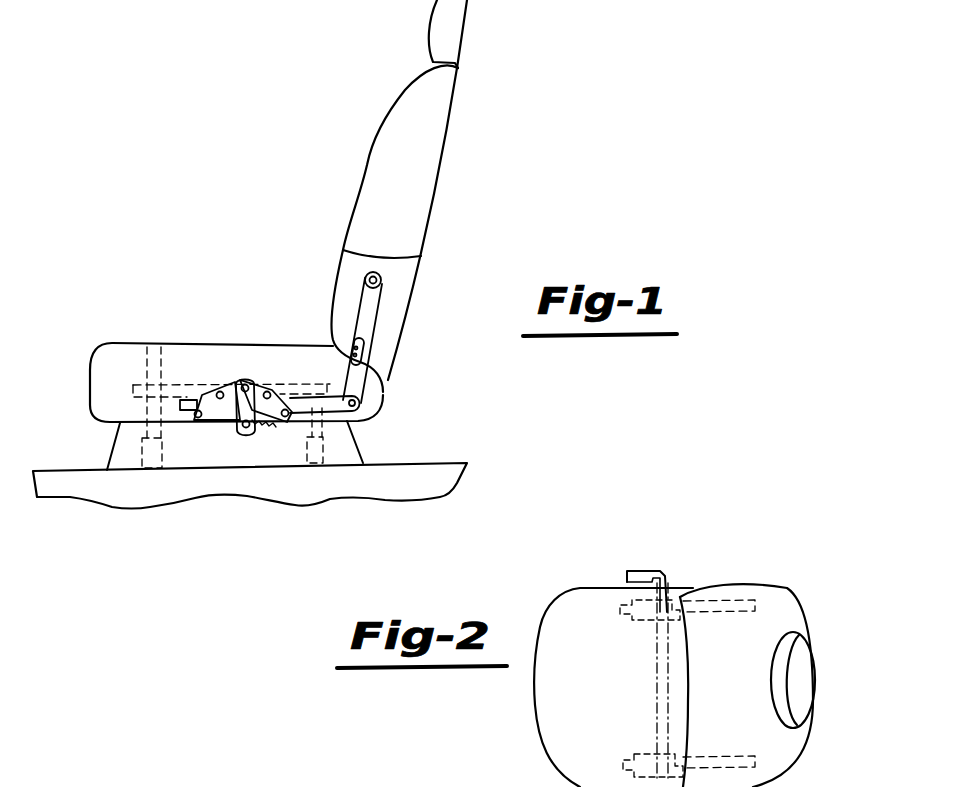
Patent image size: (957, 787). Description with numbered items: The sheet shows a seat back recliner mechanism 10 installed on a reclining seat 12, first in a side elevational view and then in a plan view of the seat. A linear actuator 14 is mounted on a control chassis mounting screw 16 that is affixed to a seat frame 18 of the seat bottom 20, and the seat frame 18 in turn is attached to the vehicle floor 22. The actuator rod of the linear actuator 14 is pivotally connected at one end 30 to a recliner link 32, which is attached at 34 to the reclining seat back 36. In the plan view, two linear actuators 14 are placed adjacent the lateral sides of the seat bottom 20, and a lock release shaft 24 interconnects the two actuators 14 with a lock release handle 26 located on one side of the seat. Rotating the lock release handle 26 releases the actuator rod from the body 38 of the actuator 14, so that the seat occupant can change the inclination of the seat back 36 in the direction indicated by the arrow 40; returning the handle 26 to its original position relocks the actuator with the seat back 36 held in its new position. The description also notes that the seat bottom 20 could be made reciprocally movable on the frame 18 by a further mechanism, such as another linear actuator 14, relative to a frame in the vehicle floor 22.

In FIG. 1, the seat back recliner mechanism 10 is at (315, 334).
In FIG. 1, the reclining seat 12 is at (478, 87).
In FIG. 1, the linear actuator 14 is at (238, 376).
In FIG. 2, the linear actuator 14 is at (648, 620).
In FIG. 1, the control chassis mounting screw 16 is at (247, 378).
In FIG. 1, the seat frame 18 is at (165, 335).
In FIG. 1, the seat bottom 20 is at (100, 388).
In FIG. 2, the seat bottom 20 is at (555, 712).
In FIG. 1, the vehicle floor 22 is at (406, 470).
In FIG. 2, the lock release shaft 24 is at (657, 683).
In FIG. 2, the lock release handle 26 is at (640, 570).
In FIG. 1, the end of the actuator rod 30 is at (380, 402).
In FIG. 1, the recliner link 32 is at (381, 327).
In FIG. 1, the attachment point 34 is at (382, 282).
In FIG. 1, the reclining seat back 36 is at (434, 150).
In FIG. 2, the body of the actuator 38 is at (477, 786).
In FIG. 1, the arrow 40 is at (568, 218).